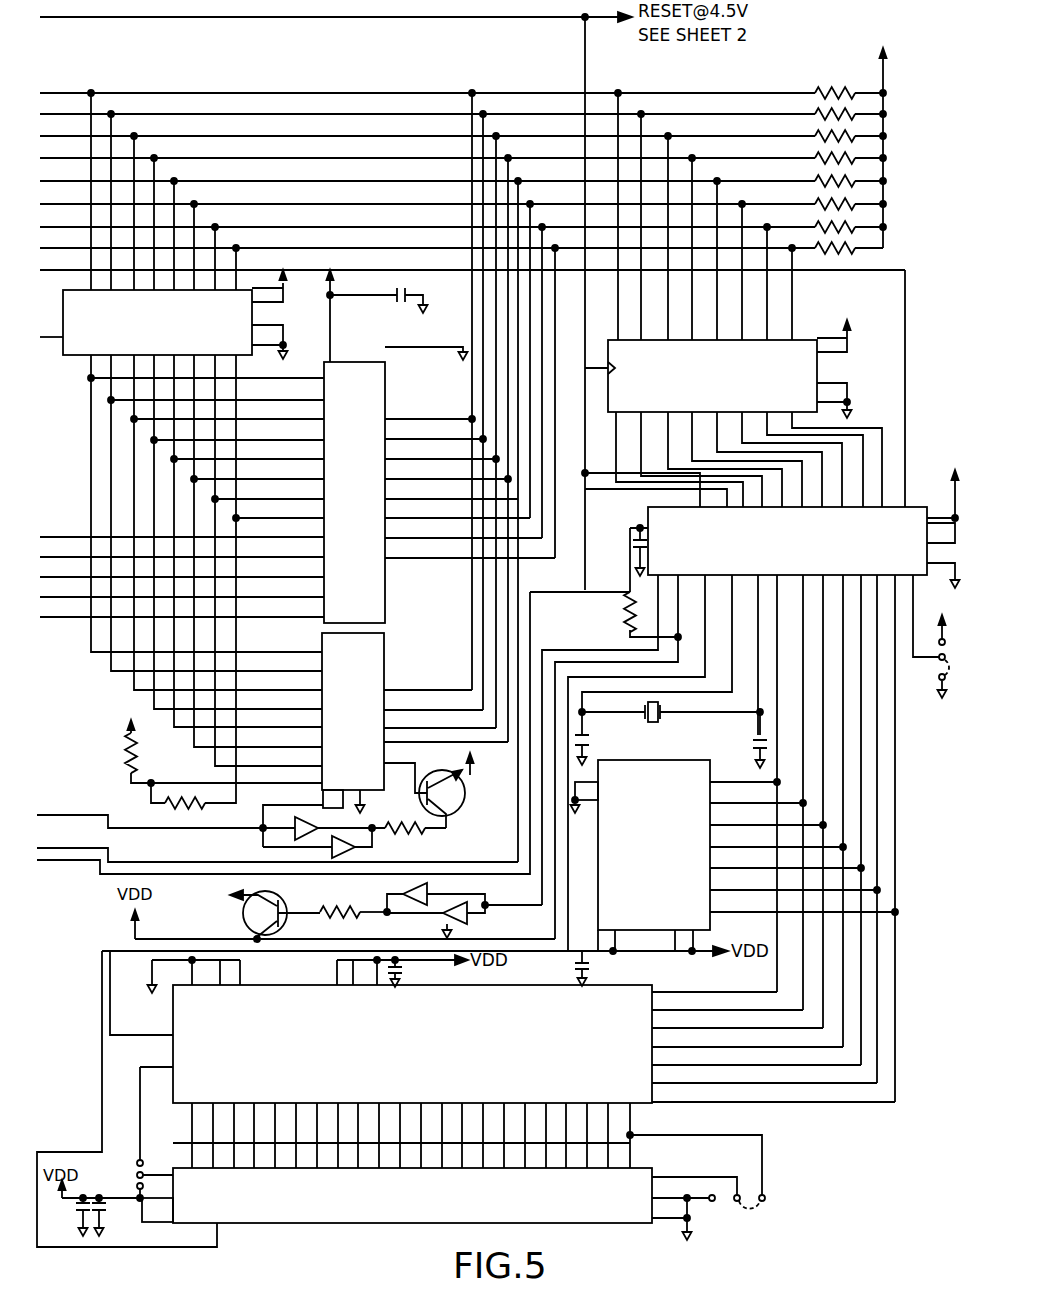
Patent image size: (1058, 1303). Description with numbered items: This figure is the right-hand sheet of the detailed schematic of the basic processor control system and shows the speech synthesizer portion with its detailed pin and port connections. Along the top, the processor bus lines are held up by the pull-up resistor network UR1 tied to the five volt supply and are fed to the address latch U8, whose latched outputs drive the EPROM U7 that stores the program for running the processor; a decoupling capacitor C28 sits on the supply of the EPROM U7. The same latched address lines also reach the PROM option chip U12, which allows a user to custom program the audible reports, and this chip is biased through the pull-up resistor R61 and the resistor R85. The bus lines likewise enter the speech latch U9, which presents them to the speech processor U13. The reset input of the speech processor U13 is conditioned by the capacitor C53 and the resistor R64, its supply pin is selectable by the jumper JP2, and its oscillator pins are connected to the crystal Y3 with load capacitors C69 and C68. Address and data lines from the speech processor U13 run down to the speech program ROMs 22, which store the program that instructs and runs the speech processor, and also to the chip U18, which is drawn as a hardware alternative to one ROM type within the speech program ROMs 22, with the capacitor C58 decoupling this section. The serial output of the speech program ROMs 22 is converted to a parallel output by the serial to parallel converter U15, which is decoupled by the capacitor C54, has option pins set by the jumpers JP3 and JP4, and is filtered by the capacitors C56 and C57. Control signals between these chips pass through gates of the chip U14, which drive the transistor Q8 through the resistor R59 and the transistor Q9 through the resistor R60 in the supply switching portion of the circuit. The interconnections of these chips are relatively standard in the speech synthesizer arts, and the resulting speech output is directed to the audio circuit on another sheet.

The 10K pull-up resistor network UR1 is at (848, 140).
The address latch HC373 U8 is at (181, 323).
The EPROM program memory U7 is at (366, 446).
The 0.1 uF decoupling capacitor C28 is at (379, 291).
The speech latch C374 U9 is at (725, 366).
The speech processor SP0256 U13 is at (799, 522).
The 0.001 uF reset capacitor C53 is at (620, 556).
The 100K reset resistor R64 is at (605, 584).
The jumper JP2 is at (931, 648).
The 3.12 MHz crystal Y3 is at (671, 718).
The 22 pF crystal capacitor C69 is at (600, 738).
The 22 pF crystal capacitor C68 is at (735, 747).
The chip U18 is at (652, 855).
The 0.1 uF decoupling capacitor C58 is at (572, 968).
The PROM option 26387 U12 is at (353, 723).
The 10K pull-up resistor R61 is at (217, 742).
The 100 ohm resistor R85 is at (182, 805).
The buffer/inverter gates U14 is at (388, 879).
The 2N4143 transistor Q8 is at (455, 793).
The 800 ohm resistor R59 is at (409, 828).
The 2N4143 transistor Q9 is at (250, 908).
The 820 ohm resistor R60 is at (352, 896).
The serial to parallel converter SPR000 U15 is at (410, 1062).
The 0.1 uF decoupling capacitor C54 is at (423, 972).
The ROM chip 22 is at (409, 1203).
The jumper JP4 is at (722, 1208).
The jumper JP3 is at (132, 1175).
The 0.1 uF capacitor C56 is at (65, 1217).
The 0.1 uF capacitor C57 is at (114, 1217).